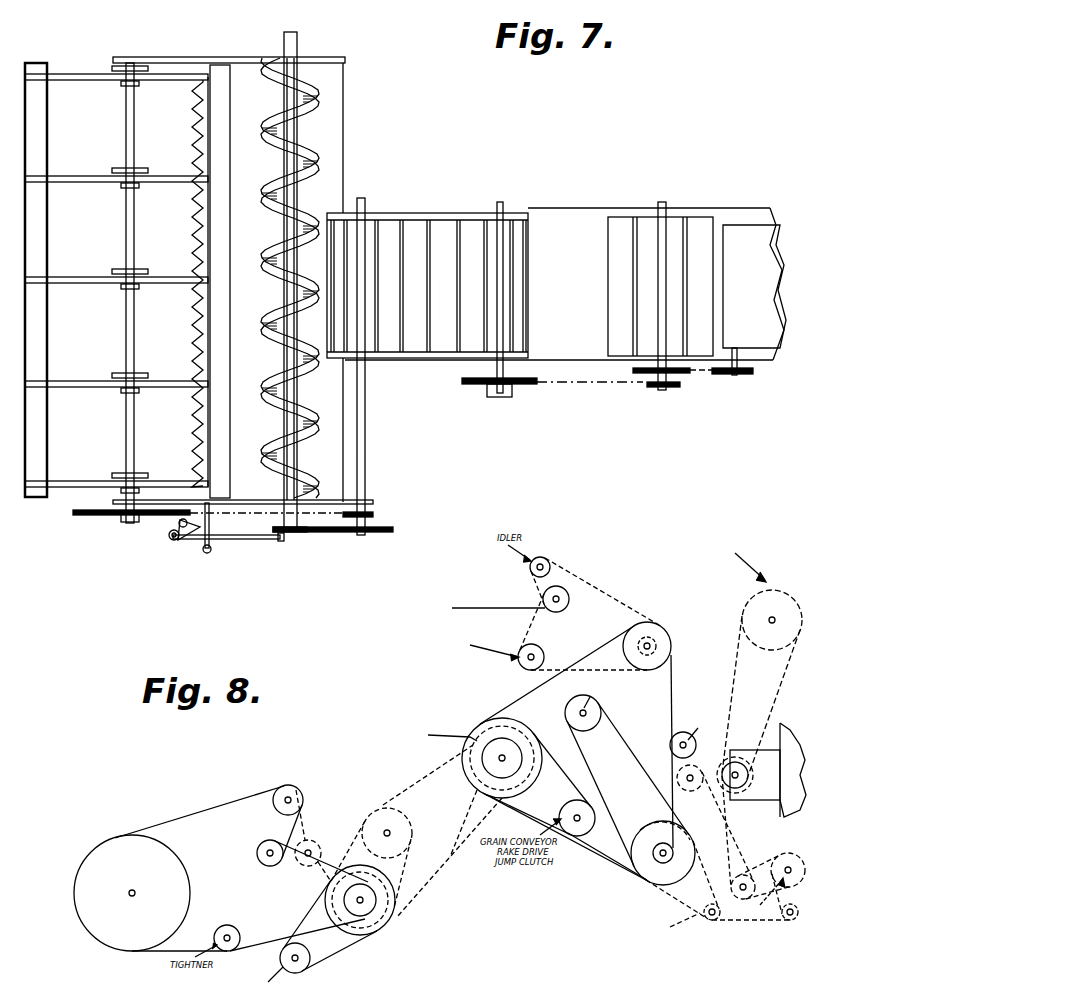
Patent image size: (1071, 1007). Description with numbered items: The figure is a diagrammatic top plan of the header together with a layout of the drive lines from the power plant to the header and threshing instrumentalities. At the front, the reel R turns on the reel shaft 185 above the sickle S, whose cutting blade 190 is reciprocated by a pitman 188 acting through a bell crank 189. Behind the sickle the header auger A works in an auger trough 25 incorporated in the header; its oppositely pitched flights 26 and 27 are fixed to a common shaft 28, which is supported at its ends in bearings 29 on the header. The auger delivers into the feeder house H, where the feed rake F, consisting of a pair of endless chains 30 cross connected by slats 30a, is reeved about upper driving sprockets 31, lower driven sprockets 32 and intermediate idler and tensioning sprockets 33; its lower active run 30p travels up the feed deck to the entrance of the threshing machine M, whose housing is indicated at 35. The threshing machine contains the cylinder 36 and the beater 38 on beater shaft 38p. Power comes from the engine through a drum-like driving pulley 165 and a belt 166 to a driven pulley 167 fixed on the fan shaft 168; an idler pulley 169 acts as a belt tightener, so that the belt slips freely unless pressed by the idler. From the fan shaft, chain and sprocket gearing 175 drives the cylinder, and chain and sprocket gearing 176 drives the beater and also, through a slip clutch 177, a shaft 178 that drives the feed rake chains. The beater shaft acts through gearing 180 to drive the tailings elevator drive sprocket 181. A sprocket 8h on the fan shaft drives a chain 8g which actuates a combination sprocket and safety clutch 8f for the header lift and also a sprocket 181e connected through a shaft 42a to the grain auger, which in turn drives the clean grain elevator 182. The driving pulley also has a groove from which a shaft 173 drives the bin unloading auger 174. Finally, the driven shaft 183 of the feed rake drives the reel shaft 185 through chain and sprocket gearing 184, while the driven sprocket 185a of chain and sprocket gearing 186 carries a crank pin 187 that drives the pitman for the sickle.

In FIG. 7, the reel R is at (68, 76).
In FIG. 8, the reel R is at (186, 865).
In FIG. 7, the feeder house H is at (221, 63).
In FIG. 8, the feeder house H is at (207, 808).
In FIG. 7, the sickle S is at (192, 418).
In FIG. 7, the header auger A is at (317, 273).
In FIG. 7, the feed rake F is at (451, 337).
In FIG. 8, the feed rake F is at (380, 800).
In FIG. 7, the threshing machine M is at (703, 207).
In FIG. 7, the auger trough 25 is at (286, 139).
In FIG. 7, the auger flight 26 is at (317, 97).
In FIG. 7, the auger flight 27 is at (284, 400).
In FIG. 7, the auger shaft 28 is at (296, 178).
In FIG. 7, the bearings 29 is at (298, 43).
In FIG. 7, the endless chains 30 is at (418, 213).
In FIG. 8, the endless chains 30 is at (425, 773).
In FIG. 7, the slats 30a is at (458, 295).
In FIG. 8, the lower active run 30p is at (449, 857).
In FIG. 7, the upper driving sprockets 31 is at (520, 350).
In FIG. 8, the upper driving sprockets 31 is at (466, 800).
In FIG. 7, the lower driven sprockets 32 is at (360, 233).
In FIG. 8, the lower driven sprockets 32 is at (397, 914).
In FIG. 8, the idler and tensioning sprockets 33 is at (407, 822).
In FIG. 7, the threshing body 35 is at (566, 207).
In FIG. 7, the cylinder 36 is at (643, 225).
In FIG. 8, the cylinder 36 is at (603, 714).
In FIG. 8, the beater 38 is at (647, 627).
In FIG. 8, the beater shaft 38p is at (658, 638).
In FIG. 8, the driving pulley 165 is at (750, 760).
In FIG. 8, the belt 166 is at (717, 831).
In FIG. 8, the driven pulley 167 is at (625, 882).
In FIG. 7, the fan shaft 168 is at (663, 202).
In FIG. 8, the fan shaft 168 is at (642, 856).
In FIG. 8, the idler pulley 169 is at (690, 768).
In FIG. 8, the shaft 173 is at (770, 622).
In FIG. 8, the unloading auger 174 is at (770, 590).
In FIG. 7, the chain and sprocket gearing 175 is at (702, 374).
In FIG. 8, the chain and sprocket gearing 175 is at (599, 786).
In FIG. 8, the chain and sprocket gearing 176 is at (669, 690).
In FIG. 7, the slip clutch 177 is at (502, 398).
In FIG. 8, the slip clutch 177 is at (518, 738).
In FIG. 7, the shaft 178 is at (498, 242).
In FIG. 8, the shaft 178 is at (476, 740).
In FIG. 8, the chain and sprocket gearing 180 is at (608, 602).
In FIG. 8, the tailings elevator drive sprocket 181 is at (563, 587).
In FIG. 8, the sprocket 181e is at (722, 913).
In FIG. 8, the clean grain elevator 182 is at (544, 655).
In FIG. 7, the driven shaft 183 is at (365, 479).
In FIG. 8, the driven shaft 183 is at (370, 895).
In FIG. 7, the chain and sprocket gearing 184 is at (316, 500).
In FIG. 8, the chain and sprocket gearing 184 is at (245, 795).
In FIG. 7, the reel shaft 185 is at (125, 432).
In FIG. 8, the reel shaft 185 is at (134, 892).
In FIG. 7, the driven sprocket 185a is at (290, 533).
In FIG. 7, the chain and sprocket gearing 186 is at (326, 533).
In FIG. 8, the chain and sprocket gearing 186 is at (353, 947).
In FIG. 7, the crank pin 187 is at (281, 540).
In FIG. 7, the pitman 188 is at (250, 539).
In FIG. 7, the bell crank 189 is at (172, 537).
In FIG. 7, the cutting blade 190 is at (210, 527).
In FIG. 8, the combination sprocket and safety clutch 8f is at (740, 878).
In FIG. 8, the chain 8g is at (672, 928).
In FIG. 8, the sprocket 8h is at (640, 832).
In FIG. 8, the shaft 42a is at (733, 886).